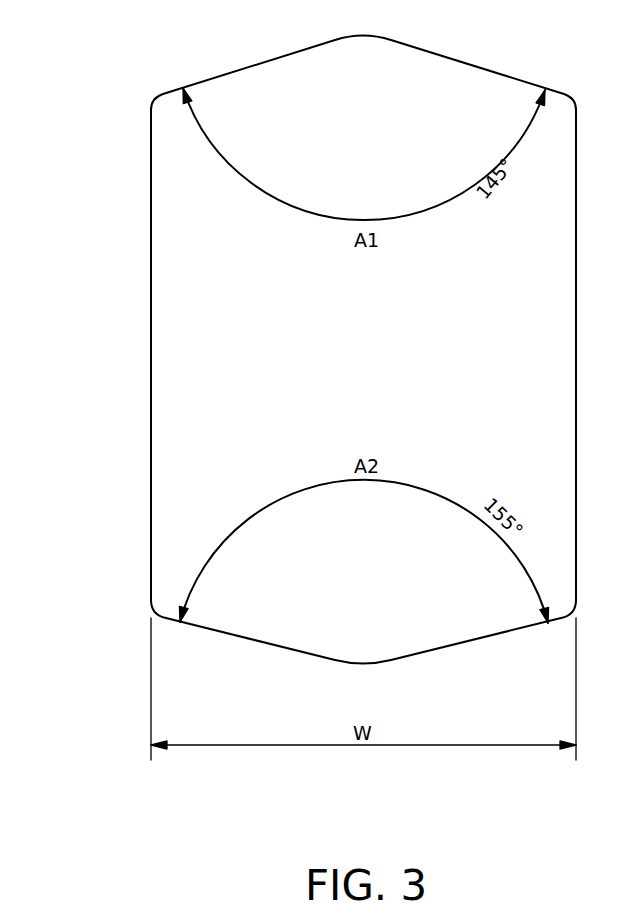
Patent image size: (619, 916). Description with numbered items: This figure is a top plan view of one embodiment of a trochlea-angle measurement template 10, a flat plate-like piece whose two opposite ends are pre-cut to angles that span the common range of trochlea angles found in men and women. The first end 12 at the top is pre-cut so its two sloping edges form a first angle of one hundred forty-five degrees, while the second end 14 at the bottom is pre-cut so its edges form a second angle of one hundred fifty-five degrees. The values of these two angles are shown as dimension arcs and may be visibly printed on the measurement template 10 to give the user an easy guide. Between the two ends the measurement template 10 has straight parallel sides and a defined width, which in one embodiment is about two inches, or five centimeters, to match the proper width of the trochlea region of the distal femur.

The trochlea-angle measurement template 10 is at (298, 355).
The first end 12 is at (457, 58).
The second end 14 is at (455, 648).